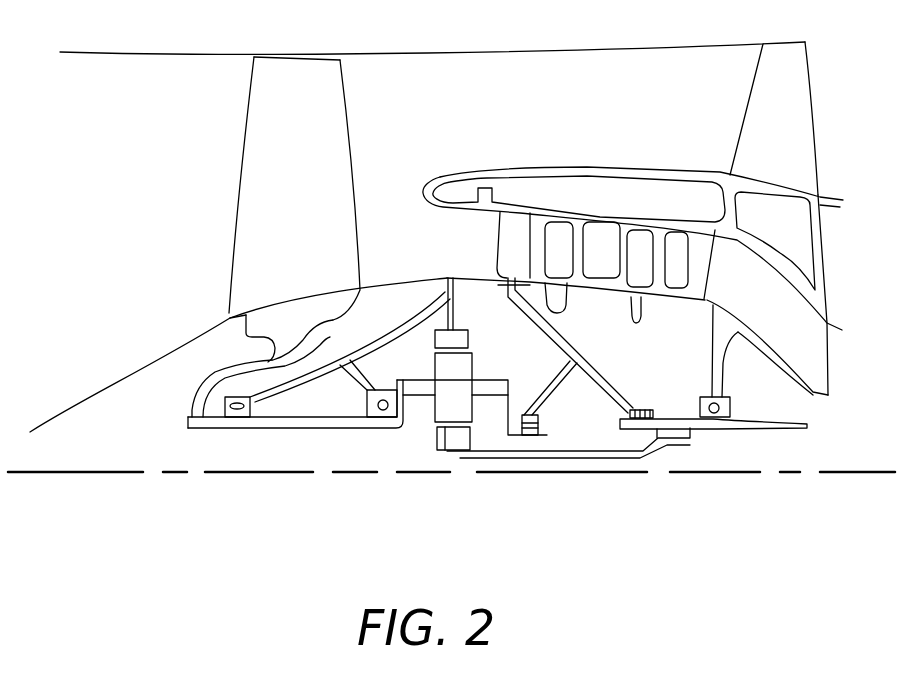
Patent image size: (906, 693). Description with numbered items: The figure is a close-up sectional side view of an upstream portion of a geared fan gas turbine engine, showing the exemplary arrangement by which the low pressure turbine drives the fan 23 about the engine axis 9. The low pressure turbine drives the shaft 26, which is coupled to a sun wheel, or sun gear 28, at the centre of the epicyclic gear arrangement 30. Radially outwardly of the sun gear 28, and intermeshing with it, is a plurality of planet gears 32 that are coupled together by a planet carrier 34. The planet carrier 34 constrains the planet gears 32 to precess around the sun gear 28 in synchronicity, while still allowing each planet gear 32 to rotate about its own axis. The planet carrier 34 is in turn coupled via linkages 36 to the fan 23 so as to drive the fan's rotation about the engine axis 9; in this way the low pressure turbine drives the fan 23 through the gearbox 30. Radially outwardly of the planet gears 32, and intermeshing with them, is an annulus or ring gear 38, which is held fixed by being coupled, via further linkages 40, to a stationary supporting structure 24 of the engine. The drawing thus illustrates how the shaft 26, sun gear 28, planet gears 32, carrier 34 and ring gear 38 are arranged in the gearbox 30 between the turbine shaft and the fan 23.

The engine axis 9 is at (125, 473).
The fan 23 is at (253, 167).
The stationary supporting structure 24 is at (457, 245).
The shaft 26 is at (583, 452).
The sun gear 28 is at (455, 442).
The epicyclic gear arrangement 30 is at (423, 420).
The planet gears 32 is at (443, 412).
The planet carrier 34 is at (507, 410).
The linkages 36 is at (405, 430).
The ring gear 38 is at (437, 318).
The linkages 40 is at (452, 340).